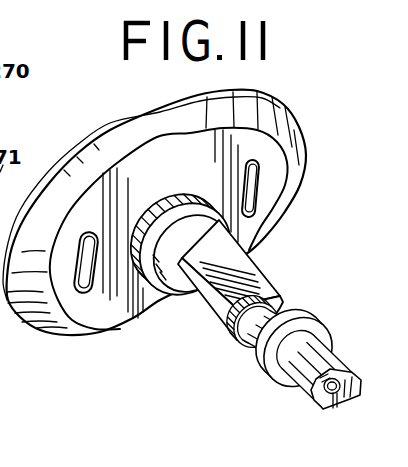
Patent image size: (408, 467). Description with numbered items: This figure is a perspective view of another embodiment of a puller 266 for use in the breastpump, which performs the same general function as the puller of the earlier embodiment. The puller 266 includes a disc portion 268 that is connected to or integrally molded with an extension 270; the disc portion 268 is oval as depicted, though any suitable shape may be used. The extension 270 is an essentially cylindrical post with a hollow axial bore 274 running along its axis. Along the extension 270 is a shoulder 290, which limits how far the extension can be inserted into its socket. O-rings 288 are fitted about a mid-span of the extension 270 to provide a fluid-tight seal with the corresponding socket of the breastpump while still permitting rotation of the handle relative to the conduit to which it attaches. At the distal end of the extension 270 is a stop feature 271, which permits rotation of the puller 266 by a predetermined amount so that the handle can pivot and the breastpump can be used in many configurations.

The puller 266 is at (304, 135).
The disc portion 268 is at (267, 187).
The extension 270 is at (269, 277).
The shoulder 290 is at (281, 297).
The o-rings 288 is at (319, 345).
The stop feature 271 is at (355, 394).
The hollow axial bore 274 is at (336, 392).